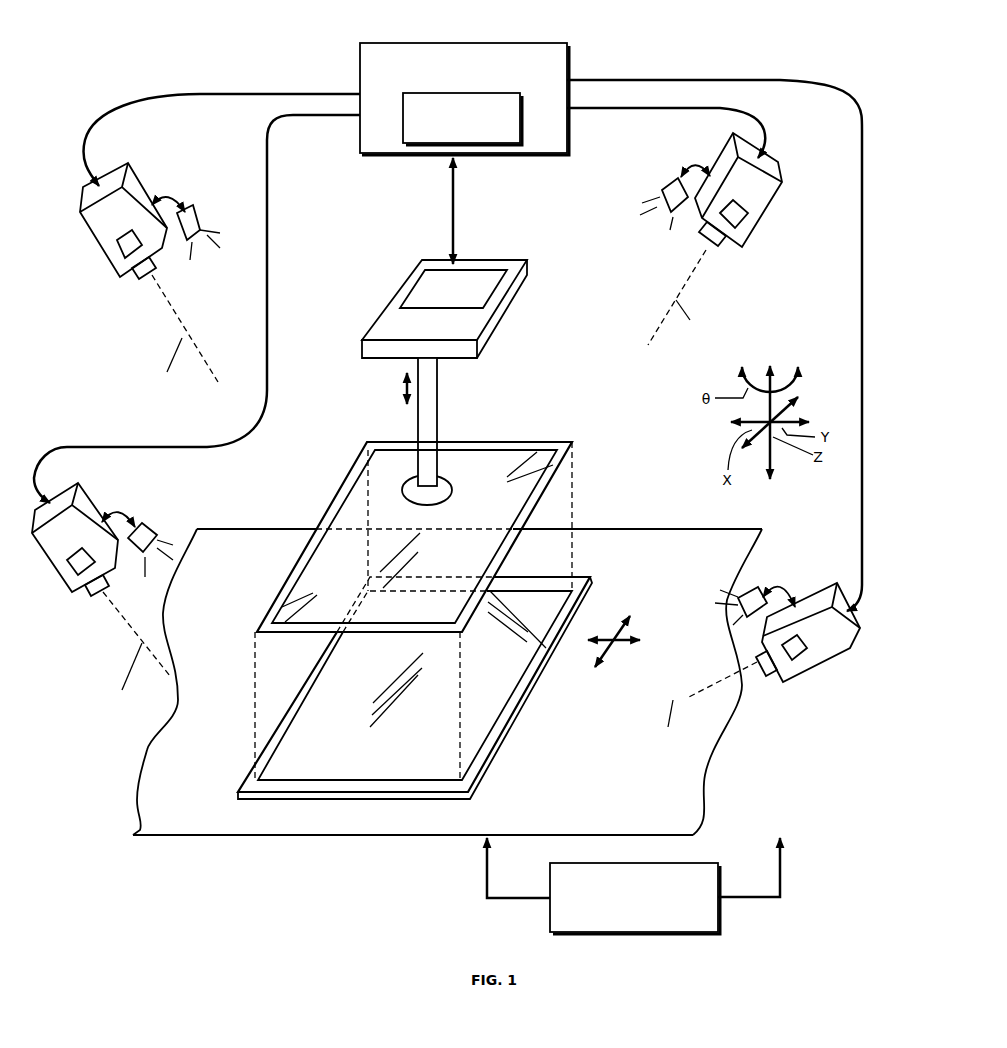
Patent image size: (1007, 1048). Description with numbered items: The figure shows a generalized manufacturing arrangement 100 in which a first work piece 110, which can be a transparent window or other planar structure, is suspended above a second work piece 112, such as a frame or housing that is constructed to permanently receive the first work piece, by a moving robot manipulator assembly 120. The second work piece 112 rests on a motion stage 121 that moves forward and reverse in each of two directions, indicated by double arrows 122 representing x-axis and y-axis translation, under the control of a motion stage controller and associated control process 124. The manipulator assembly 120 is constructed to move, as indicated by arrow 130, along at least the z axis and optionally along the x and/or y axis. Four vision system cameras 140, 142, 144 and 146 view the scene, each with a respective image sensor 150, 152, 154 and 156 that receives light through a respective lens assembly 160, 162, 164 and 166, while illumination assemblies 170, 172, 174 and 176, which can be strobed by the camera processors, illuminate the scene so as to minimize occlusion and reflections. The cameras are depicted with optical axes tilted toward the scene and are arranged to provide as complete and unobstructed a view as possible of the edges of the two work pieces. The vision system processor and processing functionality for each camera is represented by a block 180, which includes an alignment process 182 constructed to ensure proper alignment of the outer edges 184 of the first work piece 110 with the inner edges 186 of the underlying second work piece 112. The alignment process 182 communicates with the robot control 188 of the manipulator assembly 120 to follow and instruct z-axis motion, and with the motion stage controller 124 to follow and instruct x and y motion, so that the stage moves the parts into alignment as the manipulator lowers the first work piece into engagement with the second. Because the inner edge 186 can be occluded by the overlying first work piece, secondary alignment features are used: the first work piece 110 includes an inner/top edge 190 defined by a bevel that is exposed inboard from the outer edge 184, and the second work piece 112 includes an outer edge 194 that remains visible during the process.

The manufacturing arrangement 100 is at (718, 58).
The first work piece 110 is at (503, 440).
The second work piece 112 is at (588, 595).
The robot manipulator assembly 120 is at (419, 355).
The motion stage 121 is at (700, 740).
The motion stage directions 122 is at (622, 647).
The motion stage controller and control process 124 is at (558, 905).
The manipulator motion arrow 130 is at (403, 395).
The vision system camera 140 is at (102, 585).
The vision system camera 142 is at (150, 269).
The vision system camera 144 is at (739, 239).
The vision system camera 146 is at (757, 640).
The image sensor 150 is at (77, 594).
The image sensor 152 is at (122, 273).
The image sensor 154 is at (740, 218).
The image sensor 156 is at (820, 593).
The lens assembly 160 is at (98, 597).
The lens assembly 162 is at (146, 277).
The lens assembly 164 is at (715, 250).
The lens assembly 166 is at (767, 674).
The illumination assembly 170 is at (147, 522).
The illumination assembly 172 is at (193, 208).
The illumination assembly 174 is at (670, 182).
The illumination assembly 176 is at (760, 587).
The vision system processor/process 180 is at (431, 100).
The alignment process 182 is at (415, 133).
The outer edges of first work piece 184 is at (408, 442).
The inner edges of second work piece 186 is at (520, 591).
The robot control 188 is at (483, 277).
The inner/top edge 190 is at (417, 537).
The outer edge of second work piece 194 is at (590, 580).